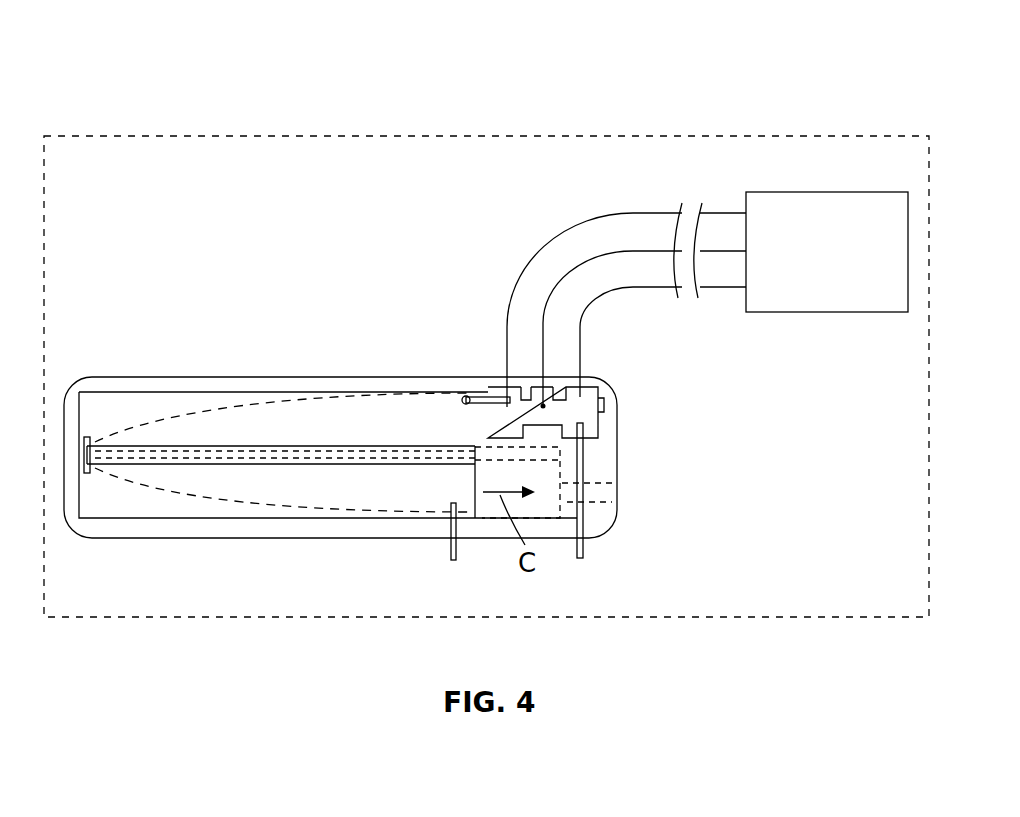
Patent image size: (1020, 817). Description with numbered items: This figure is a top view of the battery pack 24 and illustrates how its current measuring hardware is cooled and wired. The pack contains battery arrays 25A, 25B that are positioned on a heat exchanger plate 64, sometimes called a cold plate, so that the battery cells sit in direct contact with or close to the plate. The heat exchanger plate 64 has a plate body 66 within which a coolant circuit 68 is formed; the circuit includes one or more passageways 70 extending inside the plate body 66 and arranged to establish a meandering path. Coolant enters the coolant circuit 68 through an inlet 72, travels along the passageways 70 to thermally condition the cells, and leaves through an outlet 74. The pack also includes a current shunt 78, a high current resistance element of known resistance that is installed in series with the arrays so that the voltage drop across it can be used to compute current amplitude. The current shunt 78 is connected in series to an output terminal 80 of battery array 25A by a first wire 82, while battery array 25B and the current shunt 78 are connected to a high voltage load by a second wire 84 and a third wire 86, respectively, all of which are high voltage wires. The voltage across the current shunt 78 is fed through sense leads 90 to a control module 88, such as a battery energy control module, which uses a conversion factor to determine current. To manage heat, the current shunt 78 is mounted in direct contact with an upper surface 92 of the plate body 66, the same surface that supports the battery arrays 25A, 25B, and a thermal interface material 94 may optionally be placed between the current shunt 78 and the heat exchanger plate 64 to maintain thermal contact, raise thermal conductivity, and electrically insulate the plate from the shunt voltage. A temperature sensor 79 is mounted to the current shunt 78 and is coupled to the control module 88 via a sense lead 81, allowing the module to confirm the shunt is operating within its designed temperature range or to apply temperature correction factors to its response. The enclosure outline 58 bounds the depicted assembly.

The battery pack 24 is at (898, 56).
The housing enclosure 58 is at (567, 137).
The control module 88 is at (788, 191).
The sense leads 90 is at (633, 213).
The sense lead 81 is at (596, 266).
The plate body 66 is at (323, 538).
The heat exchanger plate 64 is at (263, 545).
The upper surface 92 is at (118, 385).
The battery array 25A is at (217, 410).
The battery array 25B is at (135, 513).
The inlet 72 is at (612, 430).
The current shunt 78 is at (532, 405).
The temperature sensor 79 is at (592, 394).
The thermal interface material 94 is at (600, 403).
The output terminal 80 is at (466, 393).
The first wire 82 is at (478, 397).
The passageways 70 is at (470, 395).
The coolant circuit 68 is at (480, 530).
The outlet 74 is at (620, 487).
The third wire 86 is at (585, 513).
The second wire 84 is at (448, 548).